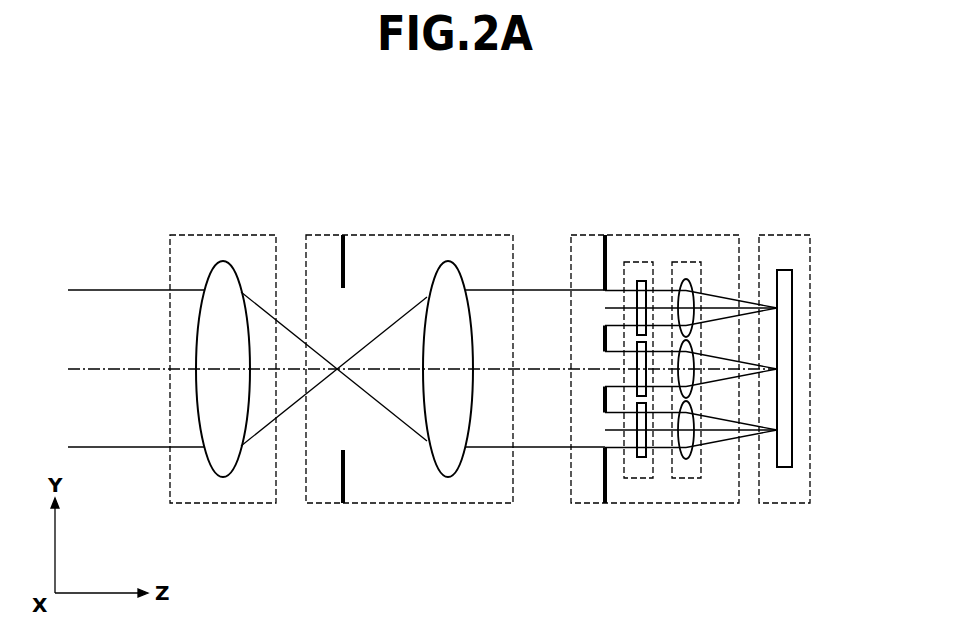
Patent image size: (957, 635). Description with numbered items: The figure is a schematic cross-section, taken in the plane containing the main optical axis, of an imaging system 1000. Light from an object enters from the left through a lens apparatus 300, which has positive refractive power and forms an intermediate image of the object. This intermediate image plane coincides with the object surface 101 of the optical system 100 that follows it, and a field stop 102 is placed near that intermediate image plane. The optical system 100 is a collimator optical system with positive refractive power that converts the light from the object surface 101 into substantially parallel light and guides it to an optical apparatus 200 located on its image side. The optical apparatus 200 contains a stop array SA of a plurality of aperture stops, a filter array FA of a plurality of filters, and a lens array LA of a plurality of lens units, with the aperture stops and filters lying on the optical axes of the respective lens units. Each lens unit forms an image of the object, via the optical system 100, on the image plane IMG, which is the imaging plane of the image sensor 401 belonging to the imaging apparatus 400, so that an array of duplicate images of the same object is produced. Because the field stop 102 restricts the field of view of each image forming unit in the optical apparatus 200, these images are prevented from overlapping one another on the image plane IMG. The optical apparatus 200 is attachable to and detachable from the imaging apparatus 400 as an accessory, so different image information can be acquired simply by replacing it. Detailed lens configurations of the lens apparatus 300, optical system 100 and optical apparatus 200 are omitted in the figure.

The imaging system 1000 is at (483, 112).
The lens apparatus 300 is at (223, 260).
The optical system 100 is at (448, 260).
The object surface 101 is at (333, 427).
The field stop 102 is at (347, 470).
The optical apparatus 200 is at (708, 177).
The stop array SA is at (603, 262).
The filter array FA is at (643, 262).
The lens array LA is at (690, 262).
The imaging apparatus 400 is at (810, 262).
The image sensor 401 is at (784, 270).
The image plane IMG is at (785, 467).